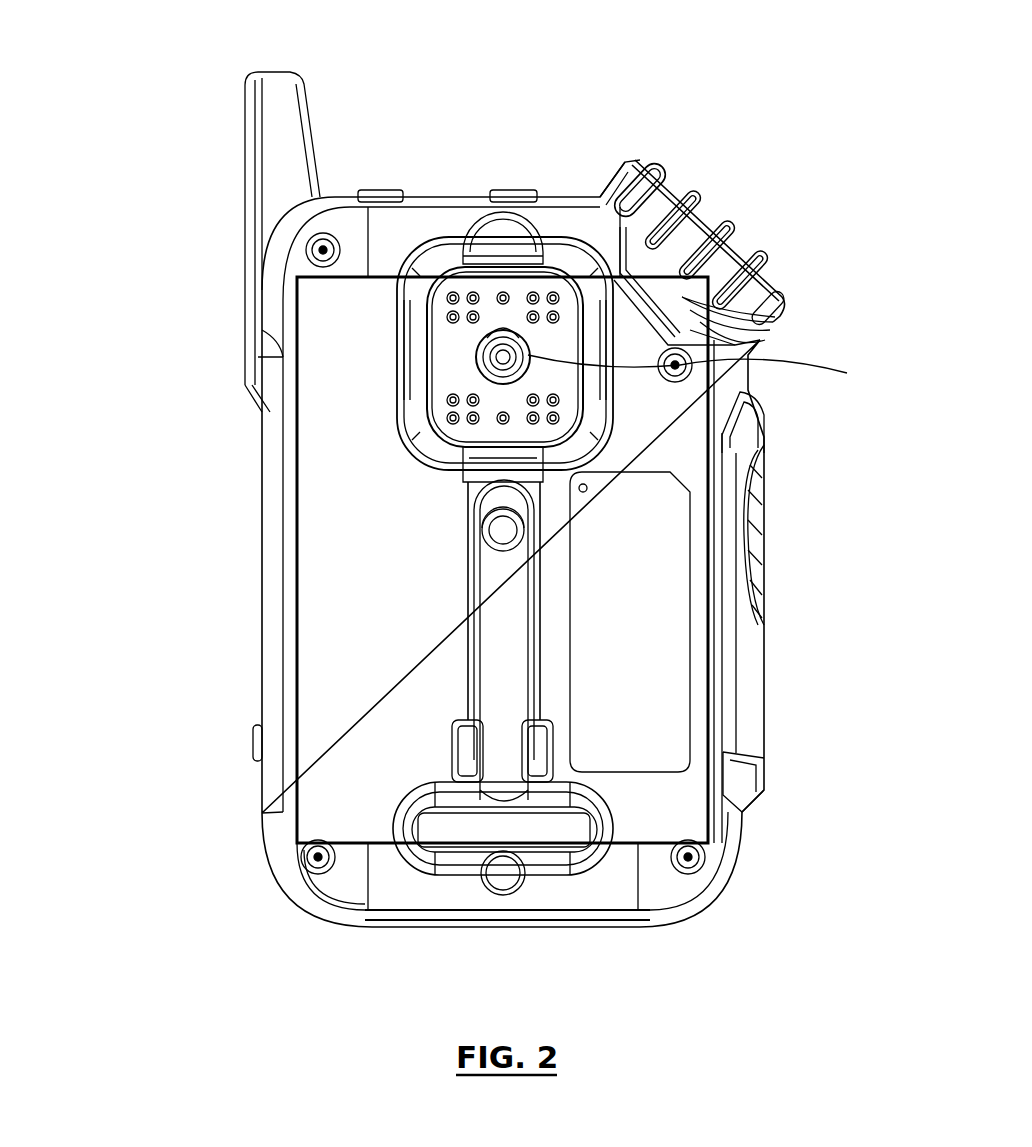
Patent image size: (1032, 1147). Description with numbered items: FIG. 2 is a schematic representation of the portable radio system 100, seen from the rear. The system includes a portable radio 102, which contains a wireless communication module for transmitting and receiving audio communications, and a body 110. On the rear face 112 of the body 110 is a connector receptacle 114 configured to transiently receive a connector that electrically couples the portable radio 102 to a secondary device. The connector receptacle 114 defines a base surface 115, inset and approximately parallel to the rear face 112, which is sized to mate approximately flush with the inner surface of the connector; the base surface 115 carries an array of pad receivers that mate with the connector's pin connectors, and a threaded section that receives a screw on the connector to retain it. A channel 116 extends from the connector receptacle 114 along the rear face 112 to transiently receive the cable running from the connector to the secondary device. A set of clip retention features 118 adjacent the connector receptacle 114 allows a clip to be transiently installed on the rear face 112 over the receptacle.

The portable radio system 100 is at (752, 120).
The portable radio 102 is at (708, 874).
The body 110 is at (585, 534).
The rear face 112 is at (414, 548).
The connector receptacle 114 is at (443, 343).
The base surface 115 is at (447, 410).
The channel 116 is at (492, 610).
The clip retention features 118 is at (398, 312).